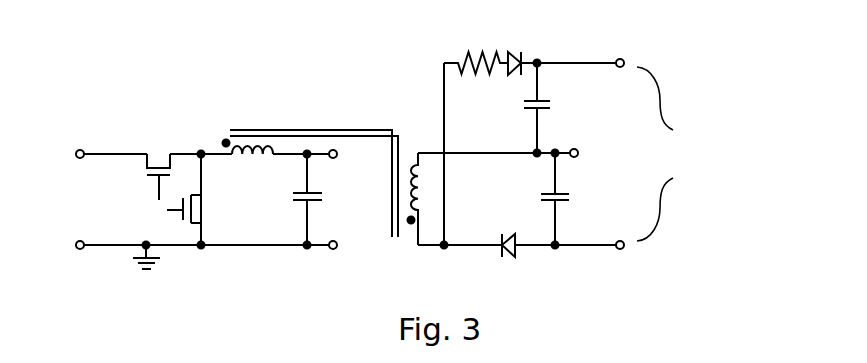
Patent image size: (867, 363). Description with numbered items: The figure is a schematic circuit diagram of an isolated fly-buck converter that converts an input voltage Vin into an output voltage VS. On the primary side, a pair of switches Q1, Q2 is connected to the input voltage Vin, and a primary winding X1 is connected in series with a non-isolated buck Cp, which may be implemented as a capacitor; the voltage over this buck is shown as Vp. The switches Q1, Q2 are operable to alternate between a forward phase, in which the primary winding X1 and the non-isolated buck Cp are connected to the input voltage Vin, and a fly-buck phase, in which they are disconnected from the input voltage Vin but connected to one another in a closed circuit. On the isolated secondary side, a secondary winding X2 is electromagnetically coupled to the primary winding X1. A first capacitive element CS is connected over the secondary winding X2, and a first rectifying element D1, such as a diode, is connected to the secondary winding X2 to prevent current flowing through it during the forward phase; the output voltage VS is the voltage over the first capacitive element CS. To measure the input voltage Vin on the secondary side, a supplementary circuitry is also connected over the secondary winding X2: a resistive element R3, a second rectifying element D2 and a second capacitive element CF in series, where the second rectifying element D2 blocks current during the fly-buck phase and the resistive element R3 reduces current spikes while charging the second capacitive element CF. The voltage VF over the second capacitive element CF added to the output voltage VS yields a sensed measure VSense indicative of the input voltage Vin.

The input voltage Vin is at (57, 195).
The switch Q1 is at (158, 161).
The switch Q2 is at (201, 213).
The primary winding X1 is at (311, 183).
The non-isolated buck Cp is at (290, 202).
The primary voltage Vp is at (339, 202).
The secondary winding X2 is at (428, 199).
The resistive element R3 is at (476, 44).
The second rectifying element D2 is at (524, 45).
The second capacitive element CF is at (518, 108).
The voltage over the second capacitive element VF is at (567, 111).
The first capacitive element CS is at (540, 199).
The output voltage VS is at (591, 207).
The first rectifying element D1 is at (511, 265).
The sensed measure VSense is at (687, 154).